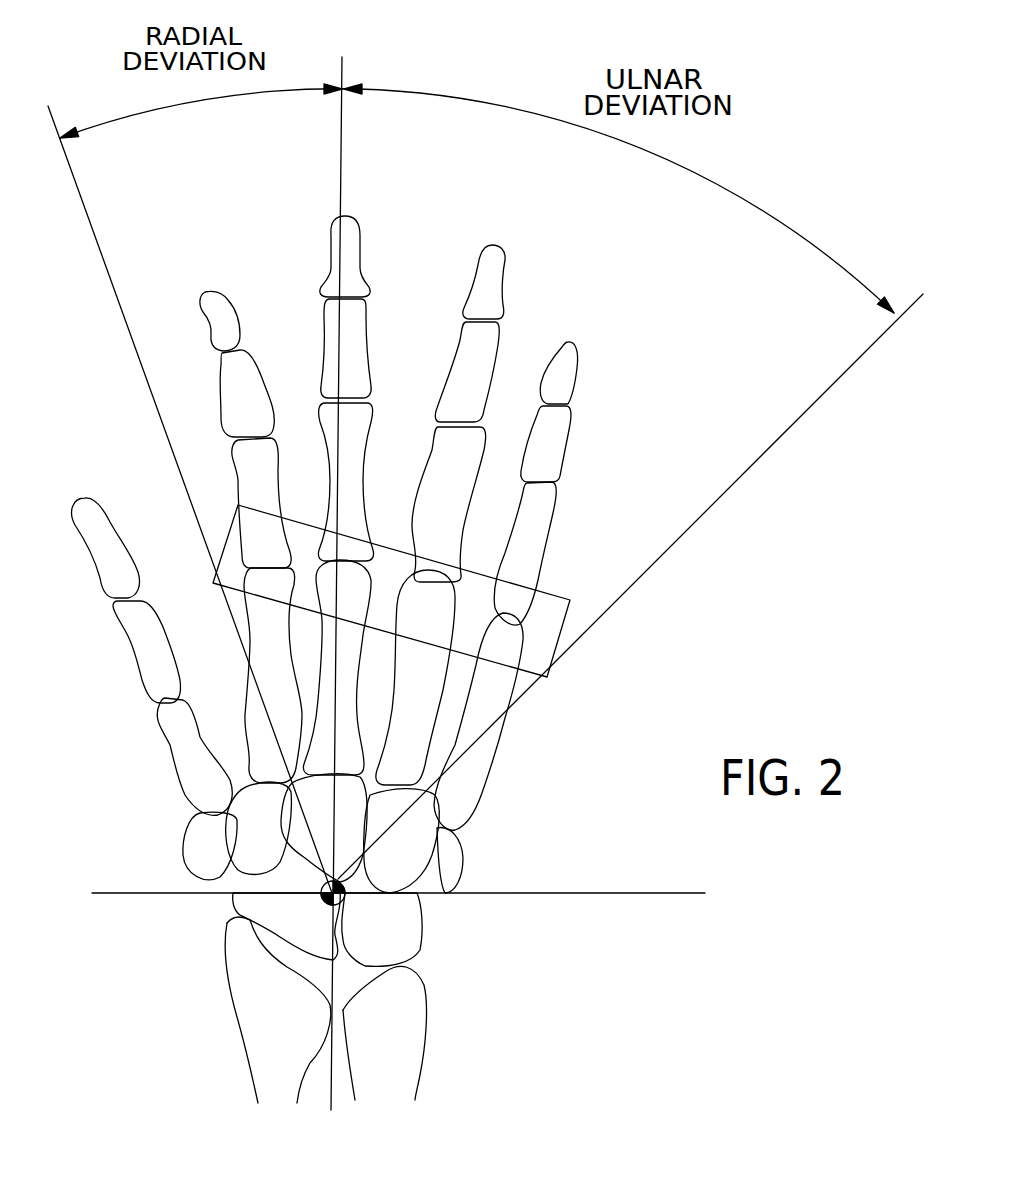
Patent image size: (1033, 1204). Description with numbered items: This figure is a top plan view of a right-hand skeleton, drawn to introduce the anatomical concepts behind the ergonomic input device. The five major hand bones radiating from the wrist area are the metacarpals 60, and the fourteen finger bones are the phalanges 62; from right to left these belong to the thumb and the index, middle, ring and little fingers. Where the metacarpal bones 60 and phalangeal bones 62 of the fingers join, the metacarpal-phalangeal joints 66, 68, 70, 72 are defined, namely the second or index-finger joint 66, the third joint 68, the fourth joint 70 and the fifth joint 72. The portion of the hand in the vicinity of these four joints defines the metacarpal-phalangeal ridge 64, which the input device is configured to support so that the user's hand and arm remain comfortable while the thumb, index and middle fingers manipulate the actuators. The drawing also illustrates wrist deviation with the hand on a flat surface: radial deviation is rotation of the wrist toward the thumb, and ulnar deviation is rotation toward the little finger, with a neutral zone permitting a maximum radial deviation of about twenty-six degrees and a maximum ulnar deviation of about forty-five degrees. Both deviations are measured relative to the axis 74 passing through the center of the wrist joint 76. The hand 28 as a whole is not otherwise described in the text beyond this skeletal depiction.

The hand 28 is at (493, 801).
The metacarpals 60 is at (403, 740).
The phalanges 62 is at (485, 266).
The metacarpal-phalangeal ridge 64 is at (572, 620).
The second metacarpal-phalangeal joint 66 is at (248, 534).
The third metacarpal-phalangeal joint 68 is at (352, 545).
The fourth metacarpal-phalangeal joint 70 is at (428, 580).
The fifth metacarpal-phalangeal joint 72 is at (517, 606).
The axis 74 is at (342, 133).
The wrist joint 76 is at (349, 899).